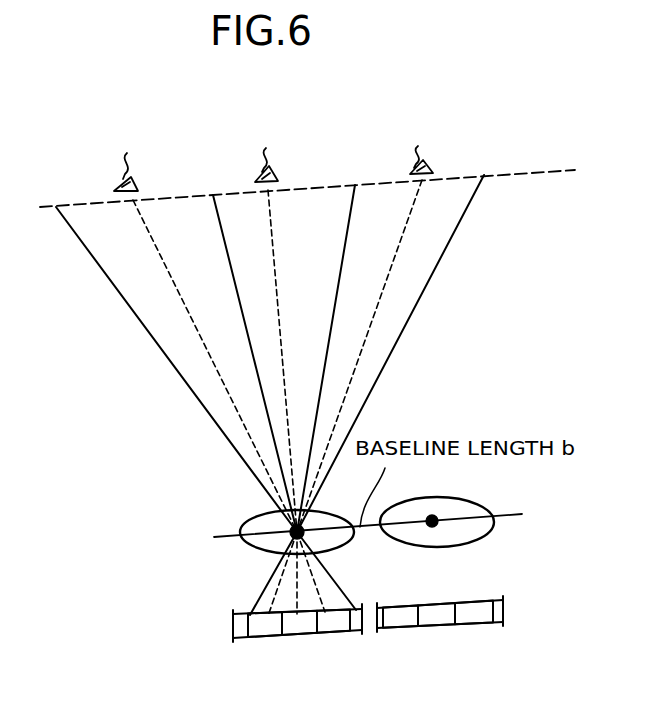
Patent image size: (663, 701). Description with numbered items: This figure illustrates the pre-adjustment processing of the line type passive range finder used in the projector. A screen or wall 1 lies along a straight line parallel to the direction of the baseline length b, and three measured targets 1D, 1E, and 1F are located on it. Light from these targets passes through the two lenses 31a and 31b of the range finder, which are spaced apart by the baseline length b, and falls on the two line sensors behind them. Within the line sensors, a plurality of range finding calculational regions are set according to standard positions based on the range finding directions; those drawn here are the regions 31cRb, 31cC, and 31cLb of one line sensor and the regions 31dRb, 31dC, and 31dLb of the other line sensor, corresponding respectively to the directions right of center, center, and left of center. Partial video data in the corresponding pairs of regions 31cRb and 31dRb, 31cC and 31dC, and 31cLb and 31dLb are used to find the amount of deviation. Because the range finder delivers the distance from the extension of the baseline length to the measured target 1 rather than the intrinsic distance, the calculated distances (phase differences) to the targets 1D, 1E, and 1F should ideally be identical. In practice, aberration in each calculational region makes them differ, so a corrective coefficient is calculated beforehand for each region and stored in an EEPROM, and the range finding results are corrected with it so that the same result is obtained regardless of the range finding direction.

The measured target 1 is at (546, 172).
The measured target 1D is at (218, 371).
The measured target 1E is at (273, 370).
The measured target 1F is at (350, 369).
The lens 31a is at (243, 539).
The lens 31b is at (482, 500).
The range finding calculational region 31cRb is at (240, 640).
The range finding calculational region 31cC is at (298, 639).
The range finding calculational region 31cLb is at (336, 634).
The range finding calculational region 31dRb is at (396, 604).
The range finding calculational region 31dC is at (440, 603).
The range finding calculational region 31dLb is at (472, 596).